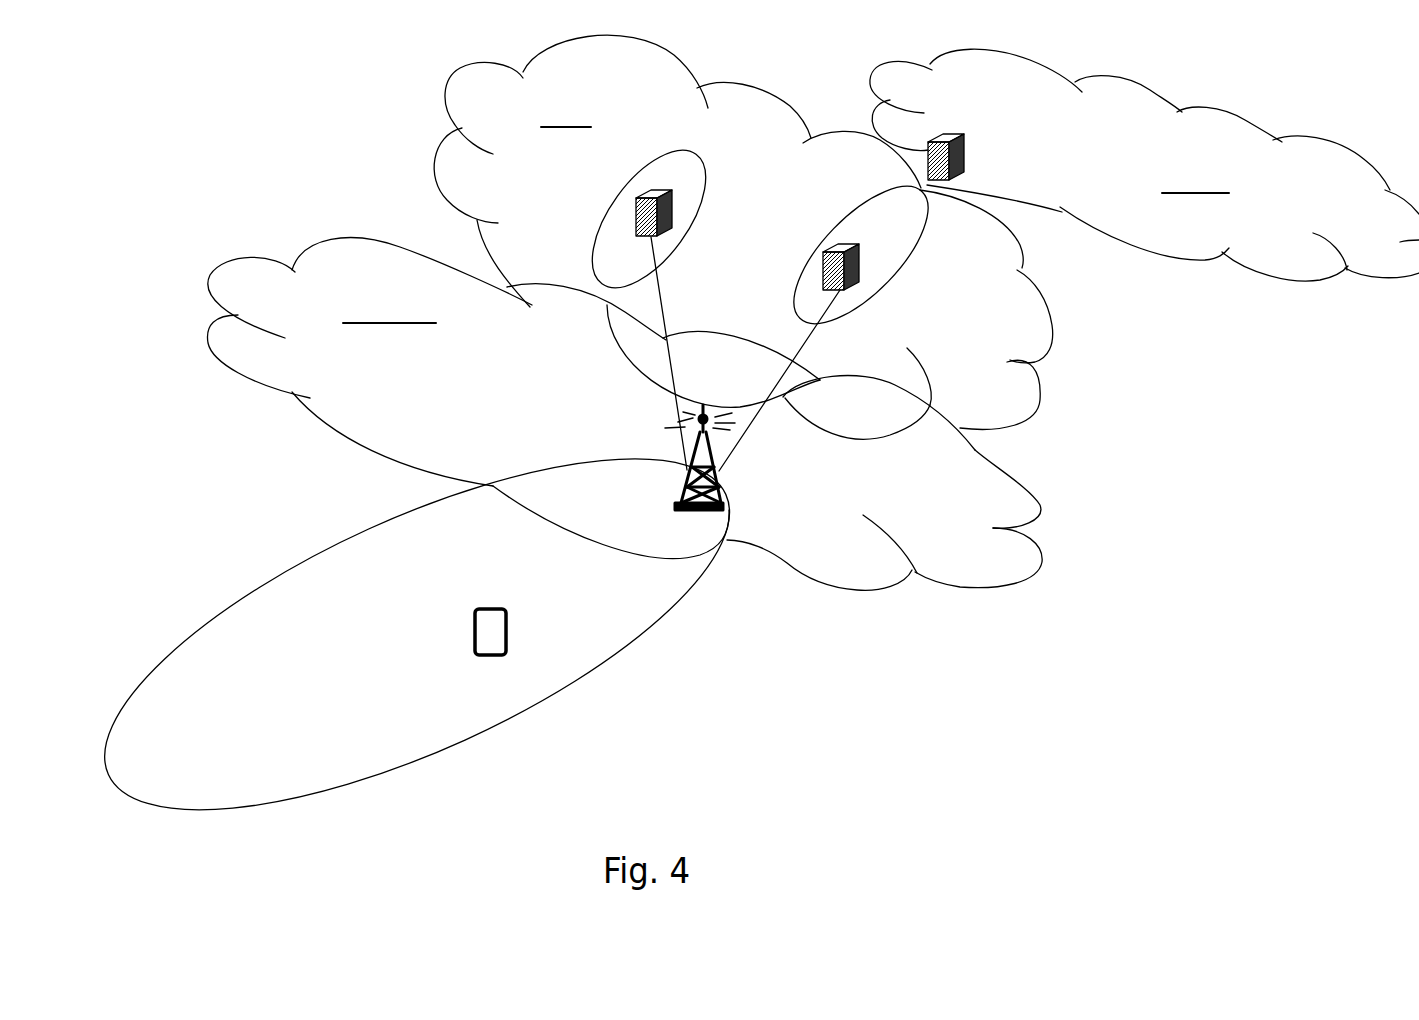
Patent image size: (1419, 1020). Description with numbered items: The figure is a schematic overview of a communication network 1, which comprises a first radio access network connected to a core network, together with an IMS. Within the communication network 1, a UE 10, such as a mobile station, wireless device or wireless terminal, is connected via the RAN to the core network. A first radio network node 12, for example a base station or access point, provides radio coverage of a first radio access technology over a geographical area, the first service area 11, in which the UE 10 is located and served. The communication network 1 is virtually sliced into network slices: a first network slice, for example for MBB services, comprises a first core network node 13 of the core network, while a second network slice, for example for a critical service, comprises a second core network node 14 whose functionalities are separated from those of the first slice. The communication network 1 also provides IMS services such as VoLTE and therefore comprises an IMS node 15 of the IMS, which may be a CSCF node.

The communication network 1 is at (318, 117).
The UE 10 is at (500, 626).
The first service area 11 is at (281, 710).
The first radio network node 12 is at (722, 466).
The first core network node 13 is at (650, 197).
The second core network node 14 is at (857, 287).
The IMS node 15 is at (955, 137).